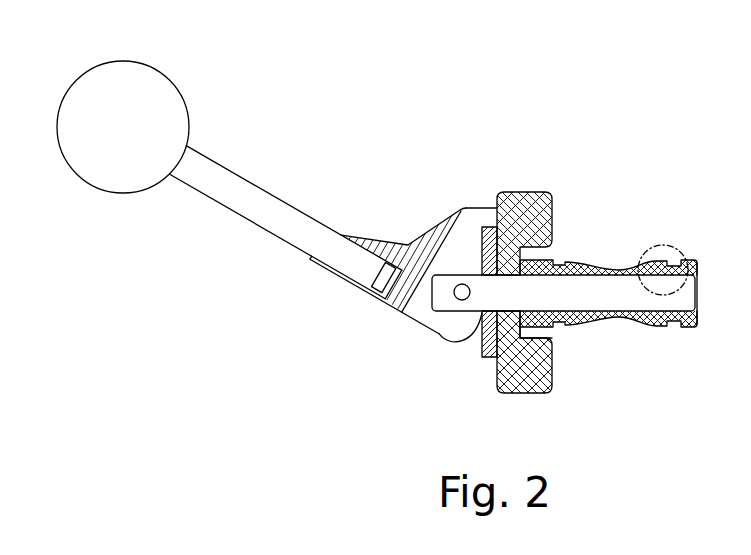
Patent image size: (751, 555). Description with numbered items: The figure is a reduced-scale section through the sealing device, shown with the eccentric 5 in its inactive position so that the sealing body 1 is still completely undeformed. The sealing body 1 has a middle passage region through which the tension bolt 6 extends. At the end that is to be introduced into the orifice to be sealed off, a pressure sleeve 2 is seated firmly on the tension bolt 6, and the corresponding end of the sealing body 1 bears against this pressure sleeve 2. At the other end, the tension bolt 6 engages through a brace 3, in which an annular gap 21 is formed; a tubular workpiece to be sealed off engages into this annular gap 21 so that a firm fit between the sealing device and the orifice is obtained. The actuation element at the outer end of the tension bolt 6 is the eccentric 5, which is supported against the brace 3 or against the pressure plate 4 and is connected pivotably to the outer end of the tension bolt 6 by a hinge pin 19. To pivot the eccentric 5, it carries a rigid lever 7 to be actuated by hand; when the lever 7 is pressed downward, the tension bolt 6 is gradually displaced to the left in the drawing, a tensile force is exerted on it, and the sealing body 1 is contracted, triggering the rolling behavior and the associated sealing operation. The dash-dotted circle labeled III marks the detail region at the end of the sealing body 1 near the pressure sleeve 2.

The rigid lever 7 is at (228, 187).
The tension bolt 6 is at (445, 308).
The hinge pin 19 is at (452, 218).
The eccentric 5 is at (456, 285).
The pressure plate 4 is at (489, 358).
The brace 3 is at (520, 396).
The annular gap 21 is at (556, 341).
The sealing body 1 is at (655, 330).
The pressure sleeve 2 is at (690, 258).
The detail circle III is at (663, 242).